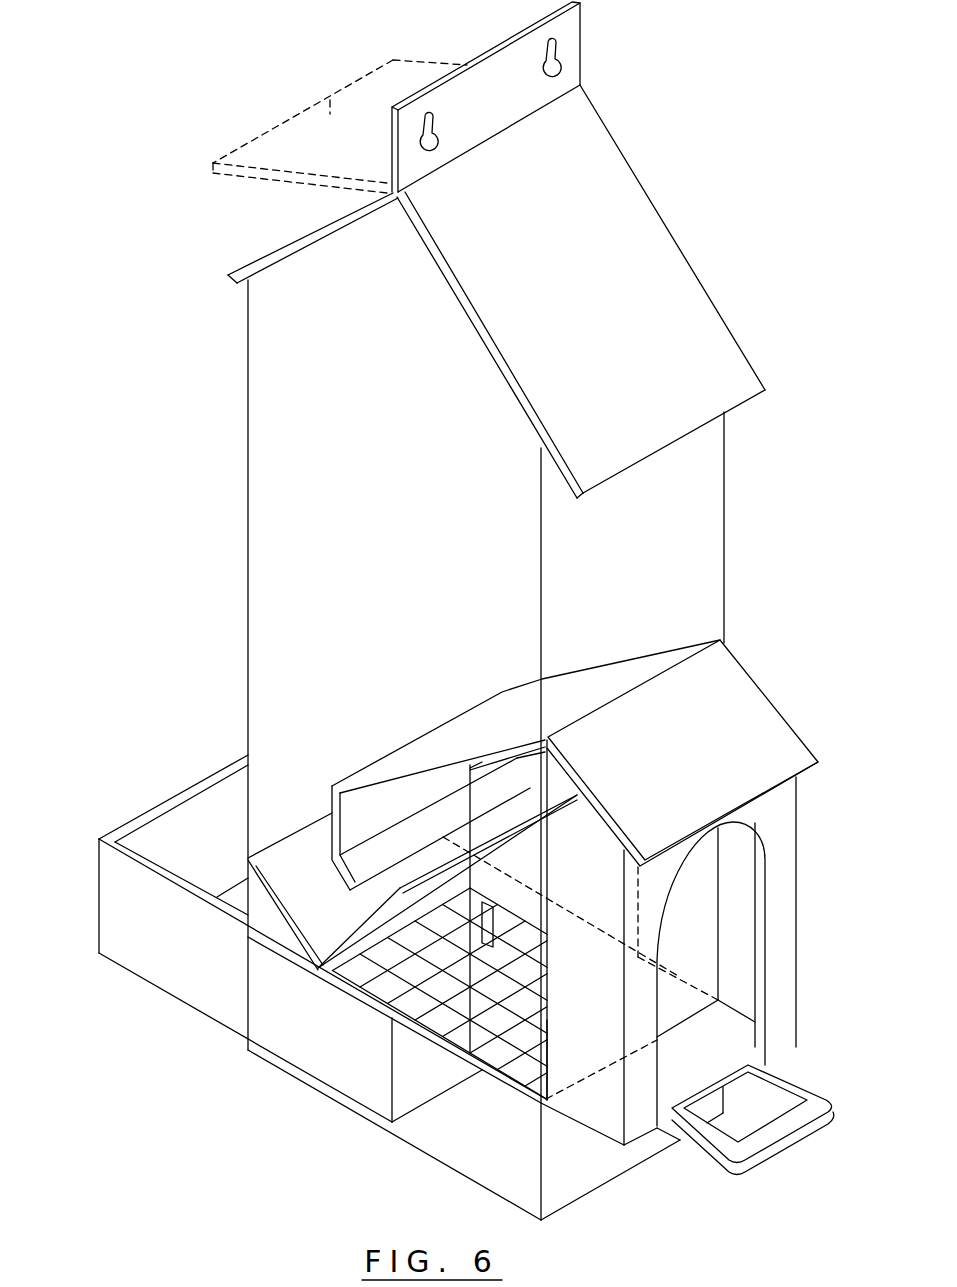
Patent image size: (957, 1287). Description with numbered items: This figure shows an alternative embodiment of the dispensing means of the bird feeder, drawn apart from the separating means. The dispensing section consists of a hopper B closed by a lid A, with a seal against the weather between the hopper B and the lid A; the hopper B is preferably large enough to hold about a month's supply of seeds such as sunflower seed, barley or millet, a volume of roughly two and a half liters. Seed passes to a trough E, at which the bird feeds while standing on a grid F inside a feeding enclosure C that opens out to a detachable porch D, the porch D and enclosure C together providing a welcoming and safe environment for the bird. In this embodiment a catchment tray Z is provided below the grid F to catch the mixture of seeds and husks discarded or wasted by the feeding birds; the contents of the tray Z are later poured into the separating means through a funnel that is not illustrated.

The lid A is at (330, 125).
The hopper B is at (362, 456).
The feeding enclosure C is at (392, 845).
The detachable porch D is at (778, 848).
The trough E is at (248, 860).
The grid F is at (567, 963).
The catchment tray Z is at (215, 983).